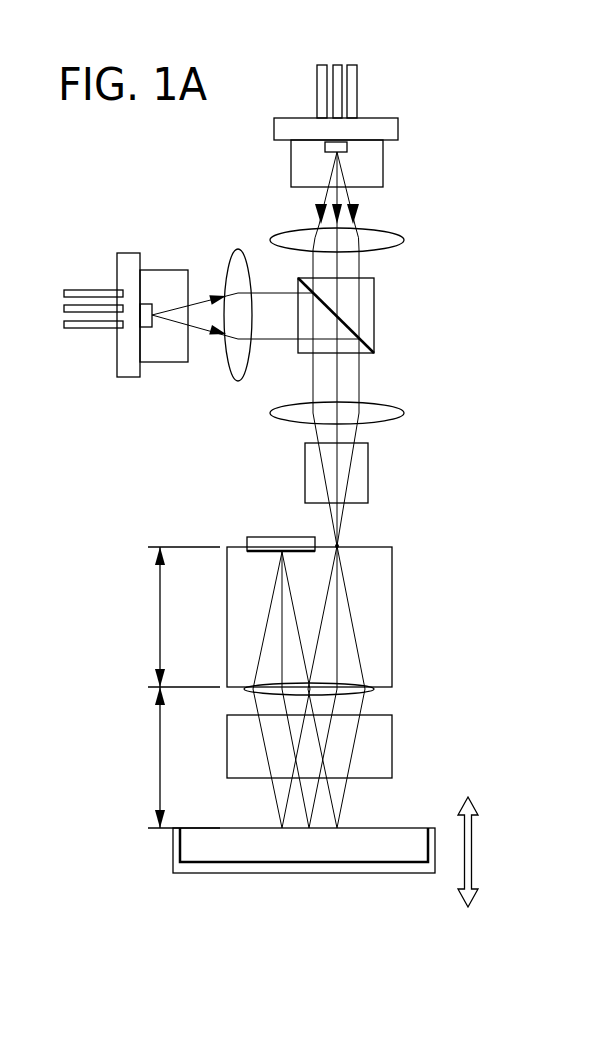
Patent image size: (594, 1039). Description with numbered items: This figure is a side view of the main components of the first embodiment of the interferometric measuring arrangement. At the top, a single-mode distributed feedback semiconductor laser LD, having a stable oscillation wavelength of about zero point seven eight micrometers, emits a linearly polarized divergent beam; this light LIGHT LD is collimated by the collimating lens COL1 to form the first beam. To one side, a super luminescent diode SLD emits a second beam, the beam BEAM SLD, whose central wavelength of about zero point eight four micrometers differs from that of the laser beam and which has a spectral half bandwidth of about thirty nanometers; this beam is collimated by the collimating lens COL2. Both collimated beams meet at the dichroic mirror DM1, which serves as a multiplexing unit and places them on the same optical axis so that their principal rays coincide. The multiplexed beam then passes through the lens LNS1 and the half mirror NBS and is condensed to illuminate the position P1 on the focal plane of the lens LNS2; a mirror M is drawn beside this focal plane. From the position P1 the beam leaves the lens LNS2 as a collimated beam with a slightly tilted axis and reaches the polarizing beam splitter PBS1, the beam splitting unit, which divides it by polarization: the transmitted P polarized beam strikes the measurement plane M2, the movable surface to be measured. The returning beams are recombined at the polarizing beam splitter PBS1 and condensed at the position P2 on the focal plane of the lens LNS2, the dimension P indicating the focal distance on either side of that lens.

The semiconductor laser LD is at (382, 160).
The beam LD (first beam) LIGHT LD is at (350, 193).
The collimating lens COL1 is at (403, 240).
The dichroic mirror (multiplexing unit) DM1 is at (366, 290).
The lens LNS1 is at (403, 412).
The half mirror NBS is at (362, 468).
The position P1 is at (340, 538).
The mirror M is at (268, 537).
The position P2 is at (262, 553).
The lens LNS2 is at (373, 689).
The polarizing beam splitter (beam splitting unit) PBS1 is at (383, 740).
The measurement plane (mirror) M2 is at (412, 837).
The focal length distance P is at (180, 687).
The super luminescent diode SLD is at (128, 253).
The beam SLD (second beam) BEAM SLD is at (198, 330).
The collimating lens COL2 is at (240, 249).